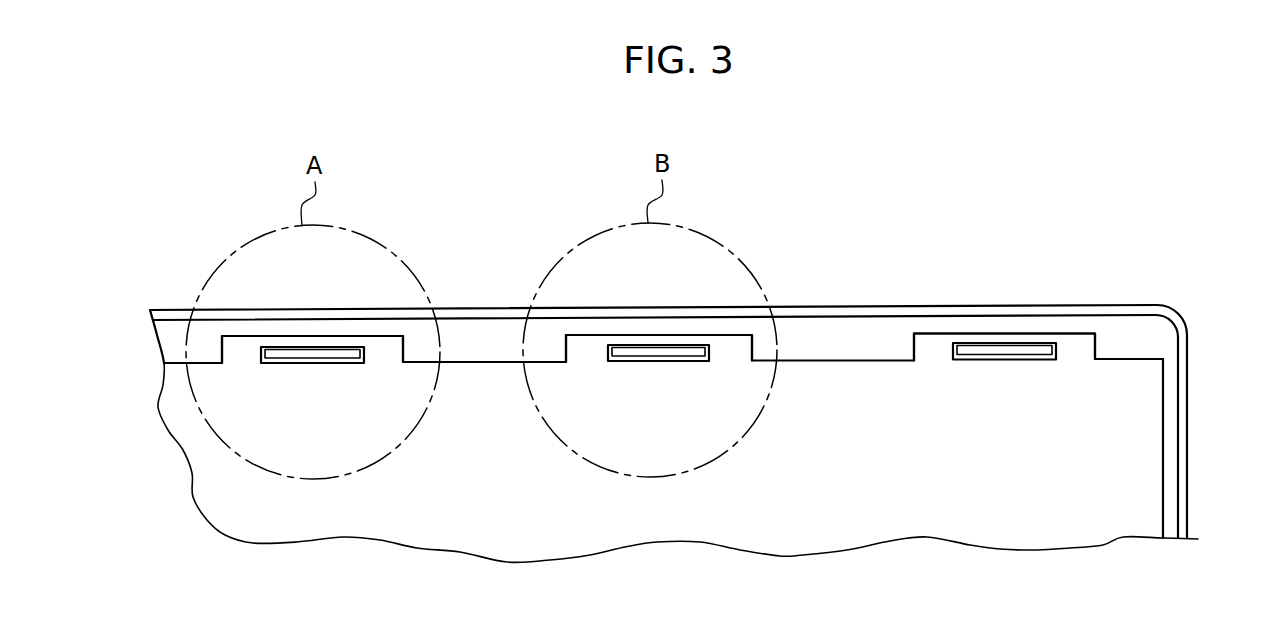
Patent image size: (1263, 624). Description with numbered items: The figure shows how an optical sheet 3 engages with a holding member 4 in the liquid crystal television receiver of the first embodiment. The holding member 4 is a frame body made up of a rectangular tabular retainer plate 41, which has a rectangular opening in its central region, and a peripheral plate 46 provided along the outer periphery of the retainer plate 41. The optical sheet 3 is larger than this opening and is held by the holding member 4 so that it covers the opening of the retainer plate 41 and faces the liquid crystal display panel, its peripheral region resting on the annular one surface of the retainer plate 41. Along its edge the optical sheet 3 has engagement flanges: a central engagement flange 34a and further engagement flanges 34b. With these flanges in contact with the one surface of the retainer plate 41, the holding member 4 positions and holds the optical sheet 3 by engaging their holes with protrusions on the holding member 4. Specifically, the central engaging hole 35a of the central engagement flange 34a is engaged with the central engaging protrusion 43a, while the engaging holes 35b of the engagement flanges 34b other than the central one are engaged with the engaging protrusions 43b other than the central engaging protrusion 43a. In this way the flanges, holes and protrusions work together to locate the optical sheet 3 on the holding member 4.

The optical sheet 3 is at (1168, 424).
The holding member 4 is at (495, 306).
The retainer plate 41 is at (824, 335).
The peripheral plate 46 is at (175, 315).
The central engagement flange 34a is at (325, 343).
The engagement flange 34b is at (675, 342).
The central engaging hole 35a is at (265, 354).
The engaging hole 35b is at (617, 353).
The central engaging protrusion 43a is at (307, 352).
The engaging protrusion 43b is at (663, 357).